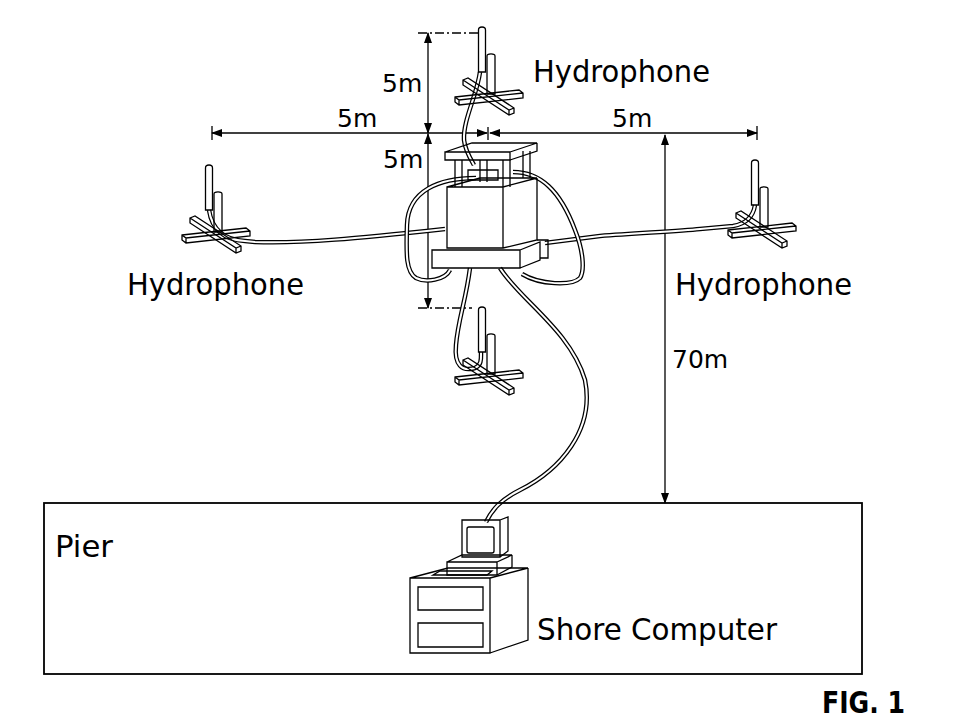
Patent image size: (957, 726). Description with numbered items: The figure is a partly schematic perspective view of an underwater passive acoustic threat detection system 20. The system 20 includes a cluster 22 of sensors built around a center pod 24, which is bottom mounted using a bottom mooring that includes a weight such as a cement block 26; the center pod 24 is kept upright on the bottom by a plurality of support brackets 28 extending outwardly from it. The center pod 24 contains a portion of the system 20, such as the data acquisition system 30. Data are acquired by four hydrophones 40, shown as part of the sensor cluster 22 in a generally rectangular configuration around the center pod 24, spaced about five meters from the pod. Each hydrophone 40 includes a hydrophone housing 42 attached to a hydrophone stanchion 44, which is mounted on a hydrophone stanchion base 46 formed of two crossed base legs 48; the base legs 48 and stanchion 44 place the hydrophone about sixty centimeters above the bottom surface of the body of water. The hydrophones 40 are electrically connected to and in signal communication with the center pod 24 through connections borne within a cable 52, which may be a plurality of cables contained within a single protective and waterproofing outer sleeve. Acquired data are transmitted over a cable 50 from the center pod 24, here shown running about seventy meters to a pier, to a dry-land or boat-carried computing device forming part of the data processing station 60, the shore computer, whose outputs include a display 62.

The underwater passive acoustic threat detection system 20 is at (408, 462).
The cluster of sensors 22 is at (352, 84).
The center pod 24 is at (540, 148).
The cement block 26 is at (508, 270).
The support brackets 28 is at (416, 200).
The data acquisition system 30 is at (503, 144).
The hydrophones 40 is at (188, 195).
The hydrophone housing 42 is at (487, 48).
The hydrophone stanchion 44 is at (498, 62).
The hydrophone stanchion base 46 is at (740, 194).
The base legs 48 is at (736, 227).
The cable 50 is at (586, 404).
The cable 52 is at (346, 238).
The data processing station 60 is at (527, 568).
The display 62 is at (460, 543).